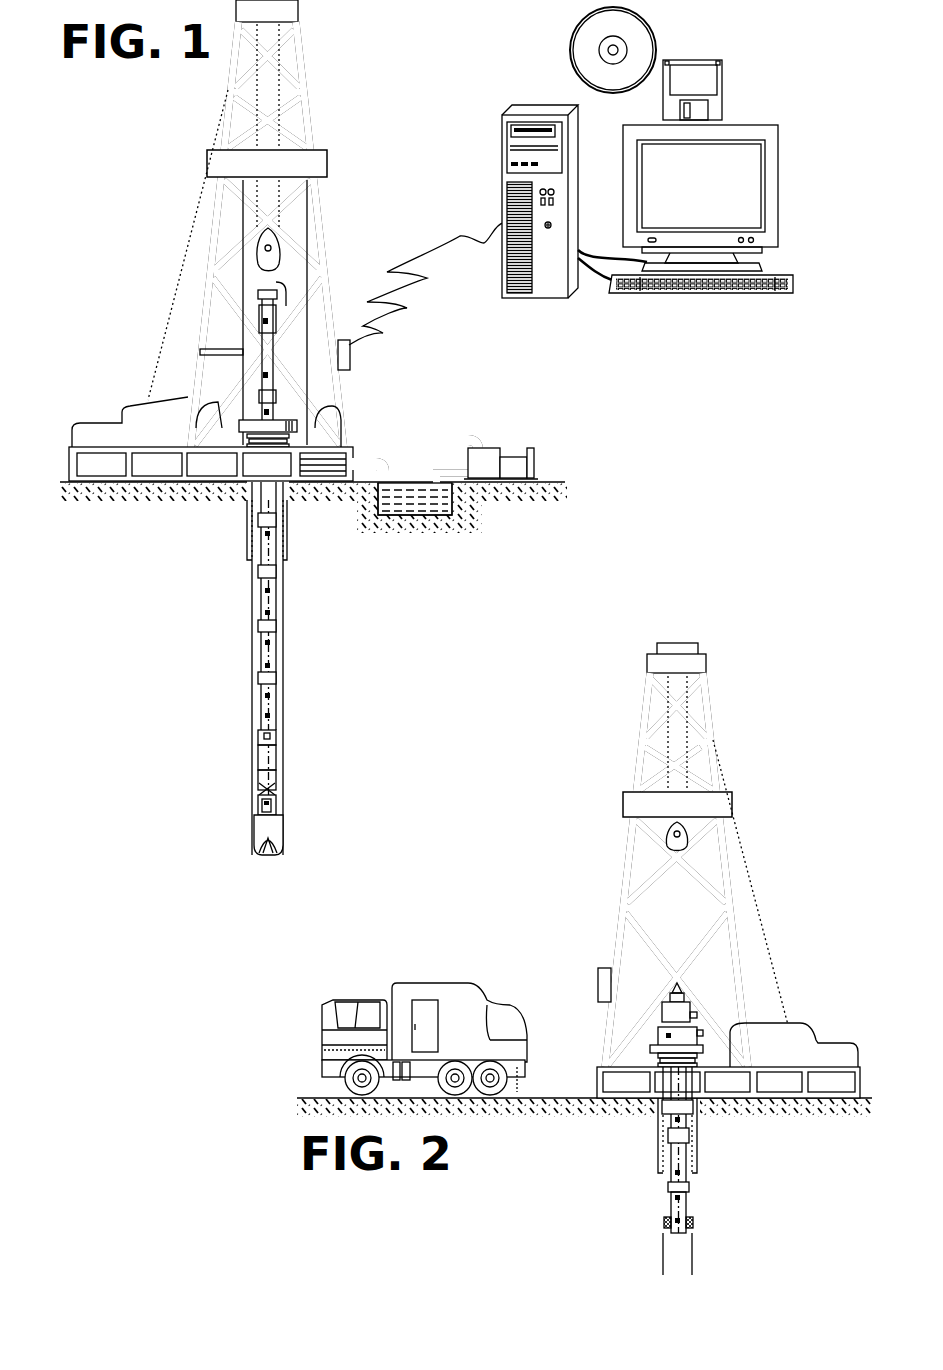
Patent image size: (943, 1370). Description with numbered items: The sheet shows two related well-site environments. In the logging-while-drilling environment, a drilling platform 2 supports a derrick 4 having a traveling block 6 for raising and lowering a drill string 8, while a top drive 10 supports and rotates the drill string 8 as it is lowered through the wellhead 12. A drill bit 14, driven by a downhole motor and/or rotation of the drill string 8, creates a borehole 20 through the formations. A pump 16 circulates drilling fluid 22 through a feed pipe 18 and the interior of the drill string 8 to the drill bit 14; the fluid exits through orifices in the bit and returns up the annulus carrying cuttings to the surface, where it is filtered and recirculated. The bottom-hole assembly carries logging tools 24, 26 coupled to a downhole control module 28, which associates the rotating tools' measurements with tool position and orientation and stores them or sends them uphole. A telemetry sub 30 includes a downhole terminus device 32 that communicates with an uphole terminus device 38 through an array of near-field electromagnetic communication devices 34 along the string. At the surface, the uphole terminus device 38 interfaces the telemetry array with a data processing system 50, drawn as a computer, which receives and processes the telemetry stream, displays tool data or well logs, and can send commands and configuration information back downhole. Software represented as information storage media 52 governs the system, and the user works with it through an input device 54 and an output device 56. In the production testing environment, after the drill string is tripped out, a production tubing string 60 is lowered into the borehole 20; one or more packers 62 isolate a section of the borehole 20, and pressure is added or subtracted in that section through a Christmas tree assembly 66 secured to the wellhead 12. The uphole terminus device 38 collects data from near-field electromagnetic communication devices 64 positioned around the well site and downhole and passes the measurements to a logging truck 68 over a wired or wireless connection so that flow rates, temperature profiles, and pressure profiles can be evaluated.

In FIG. 1, the drilling platform 2 is at (70, 448).
In FIG. 2, the drilling platform 2 is at (598, 1077).
In FIG. 1, the derrick 4 is at (310, 118).
In FIG. 2, the derrick 4 is at (609, 1031).
In FIG. 1, the traveling block 6 is at (281, 247).
In FIG. 2, the traveling block 6 is at (666, 836).
In FIG. 1, the drill string 8 is at (272, 602).
In FIG. 1, the top drive 10 is at (266, 315).
In FIG. 1, the wellhead 12 is at (240, 418).
In FIG. 1, the drill bit 14 is at (254, 832).
In FIG. 1, the pump 16 is at (483, 453).
In FIG. 1, the feed pipe 18 is at (448, 442).
In FIG. 1, the borehole 20 is at (281, 614).
In FIG. 2, the borehole 20 is at (694, 1249).
In FIG. 1, the drilling fluid 22 is at (424, 505).
In FIG. 1, the logging tool 24 is at (260, 808).
In FIG. 1, the logging tool 26 is at (260, 777).
In FIG. 1, the downhole control module 28 is at (260, 760).
In FIG. 1, the telemetry sub 30 is at (259, 737).
In FIG. 1, the downhole terminus device 32 is at (272, 733).
In FIG. 1, the near-field electromagnetic communication devices 34 is at (268, 712).
In FIG. 1, the uphole terminus device 38 is at (350, 365).
In FIG. 2, the uphole terminus device 38 is at (599, 969).
In FIG. 1, the data processing system 50 is at (573, 218).
In FIG. 1, the information storage media 52 is at (679, 57).
In FIG. 1, the input device 54 is at (766, 294).
In FIG. 1, the output device 56 is at (763, 247).
In FIG. 2, the production tubing string 60 is at (688, 1197).
In FIG. 2, the packer 62 is at (691, 1217).
In FIG. 2, the near-field electromagnetic communication devices 64 is at (668, 1218).
In FIG. 2, the Christmas tree assembly 66 is at (659, 1028).
In FIG. 2, the logging truck 68 is at (462, 983).